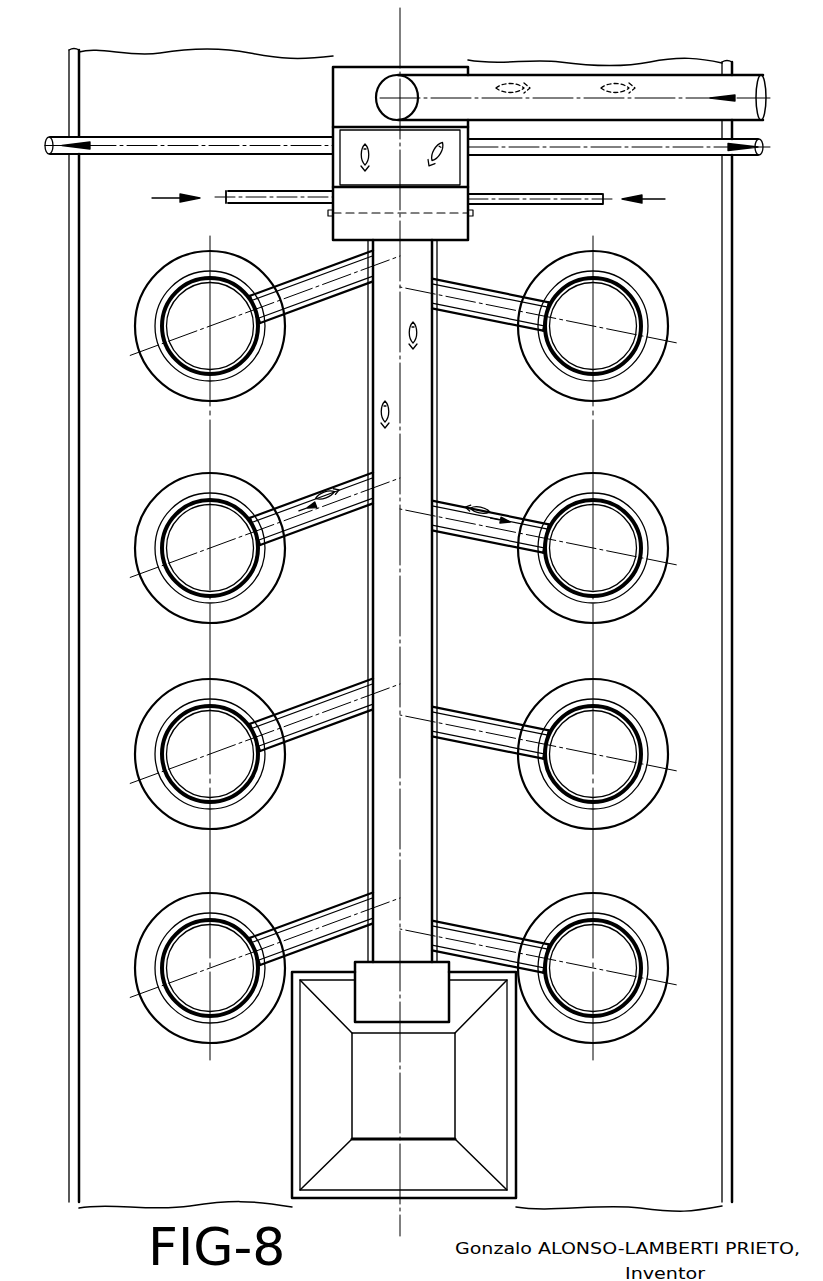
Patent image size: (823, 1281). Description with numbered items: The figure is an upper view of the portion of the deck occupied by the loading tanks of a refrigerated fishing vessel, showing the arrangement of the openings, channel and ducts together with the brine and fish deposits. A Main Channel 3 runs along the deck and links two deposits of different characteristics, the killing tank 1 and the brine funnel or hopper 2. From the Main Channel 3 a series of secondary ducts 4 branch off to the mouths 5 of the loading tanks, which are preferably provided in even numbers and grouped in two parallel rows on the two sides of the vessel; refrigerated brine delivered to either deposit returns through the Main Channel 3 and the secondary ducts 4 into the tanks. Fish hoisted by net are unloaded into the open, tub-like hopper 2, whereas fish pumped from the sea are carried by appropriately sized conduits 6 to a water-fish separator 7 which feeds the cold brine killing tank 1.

The killing tank 1 is at (353, 198).
The brine funnel or hopper 2 is at (312, 1107).
The Main Channel 3 is at (388, 575).
The secondary ducts 4 is at (510, 725).
The mouths of the loading tanks 5 is at (627, 533).
The conduits 6 is at (647, 105).
The water-fish separator 7 is at (350, 86).